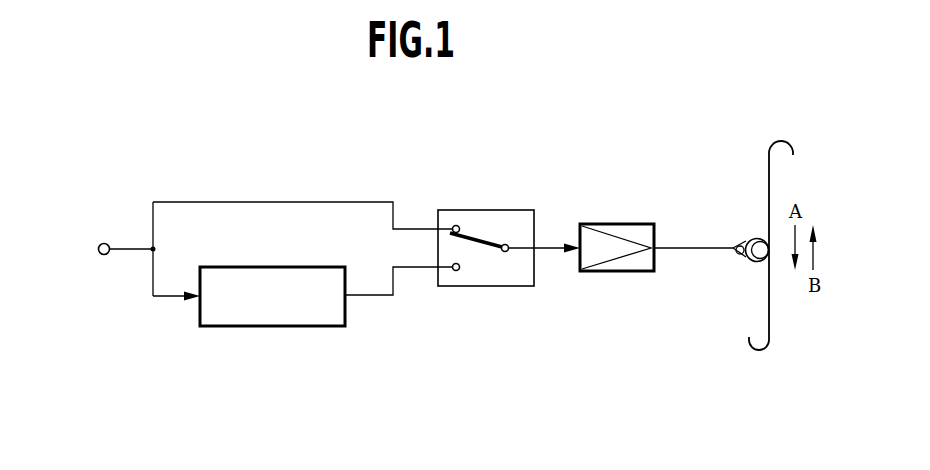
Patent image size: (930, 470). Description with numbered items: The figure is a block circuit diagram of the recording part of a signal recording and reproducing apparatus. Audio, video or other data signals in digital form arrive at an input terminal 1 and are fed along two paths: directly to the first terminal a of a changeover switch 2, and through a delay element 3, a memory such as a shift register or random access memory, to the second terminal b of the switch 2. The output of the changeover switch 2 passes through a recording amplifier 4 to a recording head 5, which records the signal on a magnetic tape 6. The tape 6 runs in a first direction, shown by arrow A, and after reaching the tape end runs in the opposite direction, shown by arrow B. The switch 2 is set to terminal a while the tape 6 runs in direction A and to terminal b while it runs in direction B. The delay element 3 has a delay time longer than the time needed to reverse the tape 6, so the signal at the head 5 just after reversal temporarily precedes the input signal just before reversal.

The input terminal 1 is at (101, 244).
The changeover switch 2 is at (515, 210).
The delay element 3 is at (325, 327).
The recording amplifier 4 is at (636, 224).
The recording head 5 is at (751, 240).
The magnetic tape 6 is at (769, 152).